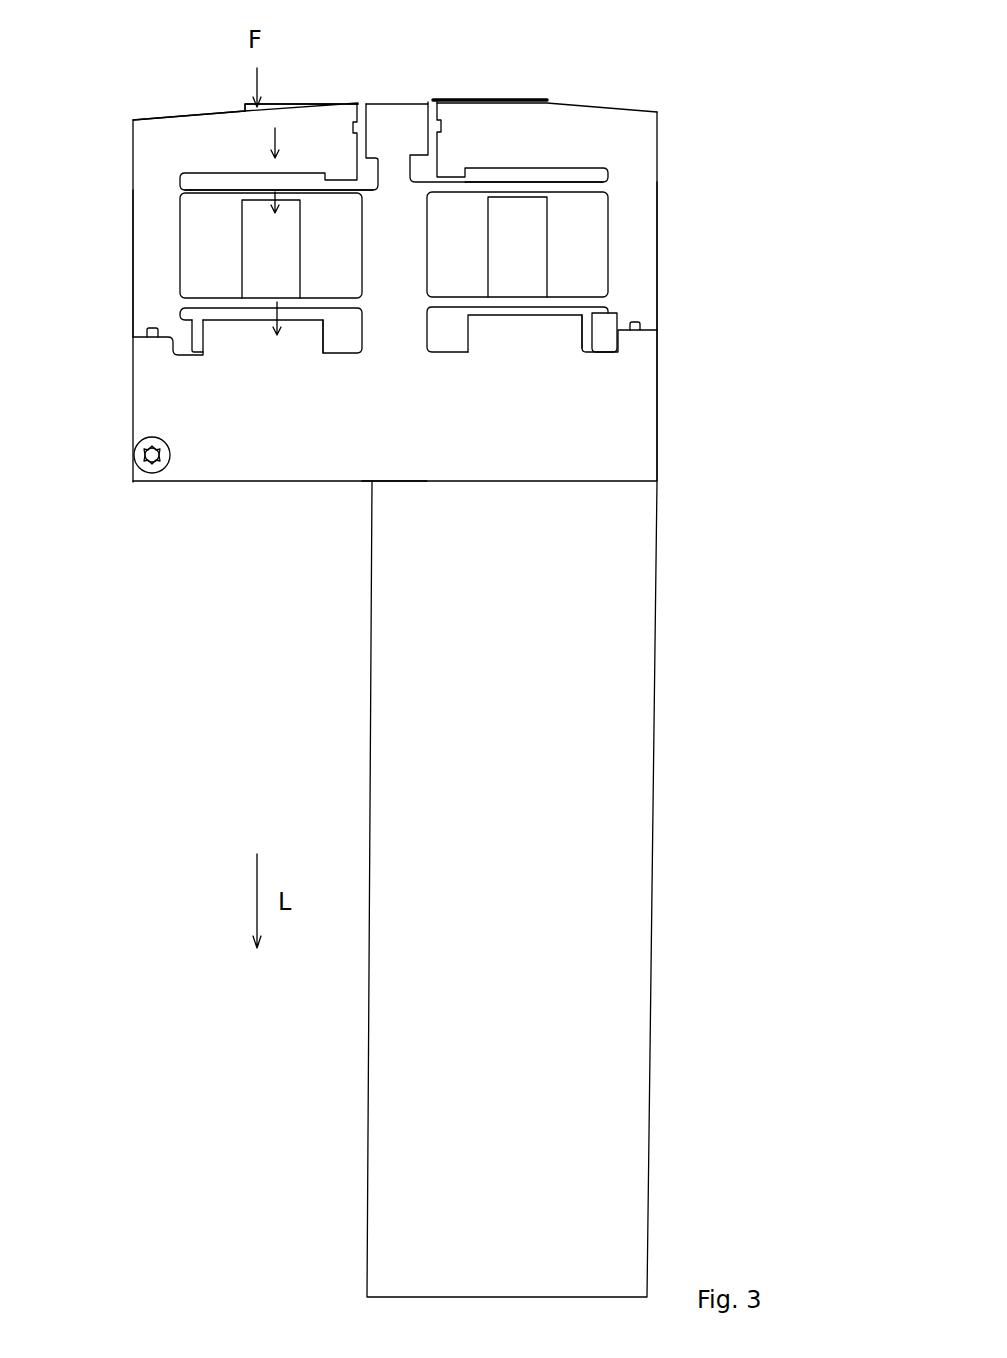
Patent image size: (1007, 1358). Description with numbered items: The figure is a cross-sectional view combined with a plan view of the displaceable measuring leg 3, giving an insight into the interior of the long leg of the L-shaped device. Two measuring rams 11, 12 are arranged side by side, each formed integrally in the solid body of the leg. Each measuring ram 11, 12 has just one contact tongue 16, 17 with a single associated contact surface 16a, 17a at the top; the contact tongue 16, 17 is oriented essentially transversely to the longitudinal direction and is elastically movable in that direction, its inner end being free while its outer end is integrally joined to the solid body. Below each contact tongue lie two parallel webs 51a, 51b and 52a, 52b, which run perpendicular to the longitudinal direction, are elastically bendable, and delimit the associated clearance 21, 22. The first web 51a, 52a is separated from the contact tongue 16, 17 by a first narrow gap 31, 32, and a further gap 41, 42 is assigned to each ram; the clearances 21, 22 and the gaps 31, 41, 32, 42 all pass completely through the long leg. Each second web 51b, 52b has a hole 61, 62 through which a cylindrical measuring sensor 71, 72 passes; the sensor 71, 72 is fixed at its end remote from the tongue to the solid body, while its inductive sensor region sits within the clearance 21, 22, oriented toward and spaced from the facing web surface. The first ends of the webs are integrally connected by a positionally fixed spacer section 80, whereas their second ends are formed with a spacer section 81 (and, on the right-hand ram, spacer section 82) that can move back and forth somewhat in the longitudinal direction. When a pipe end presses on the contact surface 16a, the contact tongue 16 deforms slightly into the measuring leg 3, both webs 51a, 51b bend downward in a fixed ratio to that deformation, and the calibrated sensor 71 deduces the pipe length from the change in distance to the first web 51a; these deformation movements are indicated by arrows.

The measuring leg 3 is at (688, 632).
The measuring ram 11 is at (148, 295).
The measuring ram 12 is at (633, 245).
The contact tongue 16 is at (203, 142).
The contact surface 16a is at (300, 100).
The contact tongue 17 is at (588, 128).
The contact surface 17a is at (520, 95).
The clearance 21 is at (203, 258).
The clearance 22 is at (588, 220).
The first narrow gap 31 is at (360, 107).
The first narrow gap 32 is at (592, 168).
The gap 41 is at (165, 350).
The gap 42 is at (618, 330).
The first web 51a is at (322, 188).
The second web 51b is at (332, 303).
The first web 52a is at (577, 185).
The second web 52b is at (580, 298).
The hole 61 is at (270, 318).
The hole 62 is at (527, 298).
The measuring sensor 71 is at (263, 227).
The measuring sensor 72 is at (508, 223).
The spacer section 80 is at (400, 253).
The spacer section 81 is at (148, 272).
The spacer section 82 is at (633, 262).